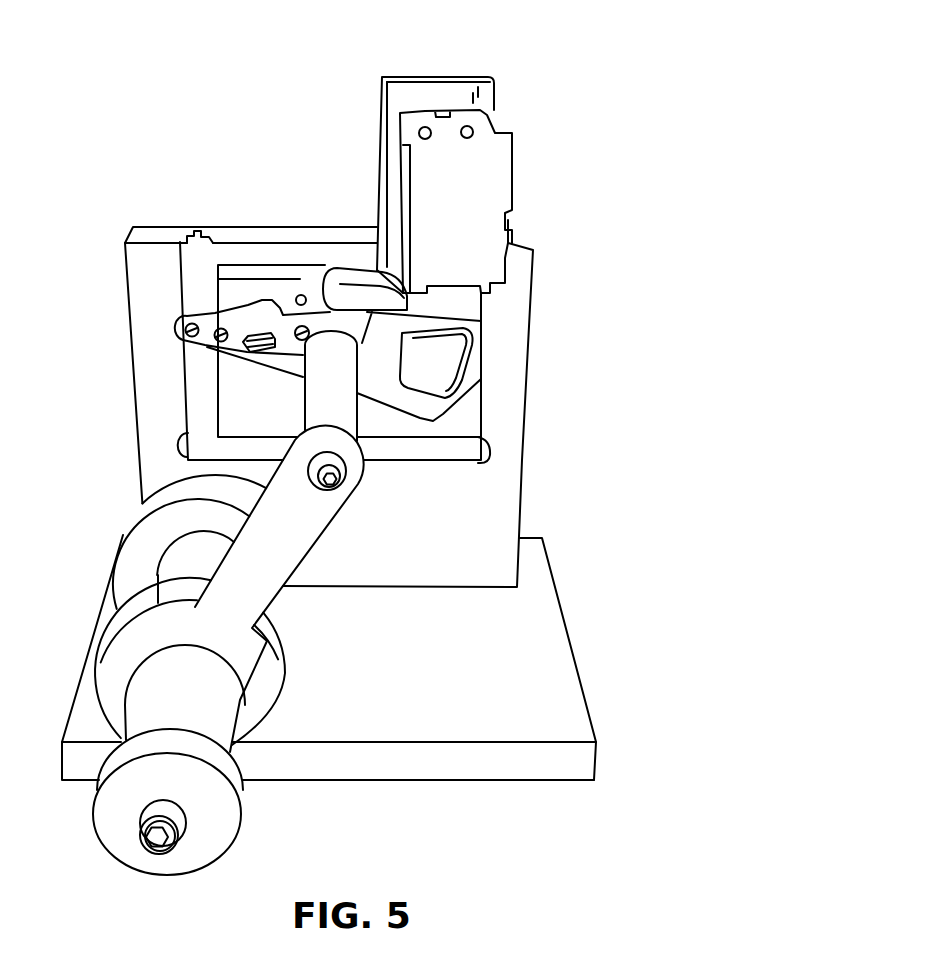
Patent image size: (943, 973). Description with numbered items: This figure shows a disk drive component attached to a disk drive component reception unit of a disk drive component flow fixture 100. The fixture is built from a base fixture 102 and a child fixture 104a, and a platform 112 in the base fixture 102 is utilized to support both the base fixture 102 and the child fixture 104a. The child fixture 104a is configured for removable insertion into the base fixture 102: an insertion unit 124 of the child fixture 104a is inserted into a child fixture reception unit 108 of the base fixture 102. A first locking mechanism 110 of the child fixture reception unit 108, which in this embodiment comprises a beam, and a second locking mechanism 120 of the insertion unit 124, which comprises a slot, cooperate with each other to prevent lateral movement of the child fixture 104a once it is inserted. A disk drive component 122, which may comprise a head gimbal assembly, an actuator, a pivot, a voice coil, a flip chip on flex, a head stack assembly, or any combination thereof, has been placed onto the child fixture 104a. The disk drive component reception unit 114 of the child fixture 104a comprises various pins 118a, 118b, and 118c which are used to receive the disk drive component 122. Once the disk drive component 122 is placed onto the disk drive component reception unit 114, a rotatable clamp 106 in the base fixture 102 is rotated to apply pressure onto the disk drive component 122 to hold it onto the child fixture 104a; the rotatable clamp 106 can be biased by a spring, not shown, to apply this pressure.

The disk drive component flow fixture 100 is at (632, 117).
The base fixture 102 is at (552, 600).
The child fixture 104a is at (452, 77).
The rotatable clamp 106 is at (352, 490).
The child fixture reception unit 108 is at (522, 373).
The first locking mechanism 110 is at (197, 232).
The platform 112 is at (508, 765).
The disk drive component reception unit 114 is at (384, 178).
The pin 118a is at (418, 133).
The pin 118b is at (474, 133).
The pin 118c is at (301, 295).
The second locking mechanism 120 is at (206, 236).
The disk drive component 122 is at (487, 173).
The insertion unit 124 is at (190, 277).